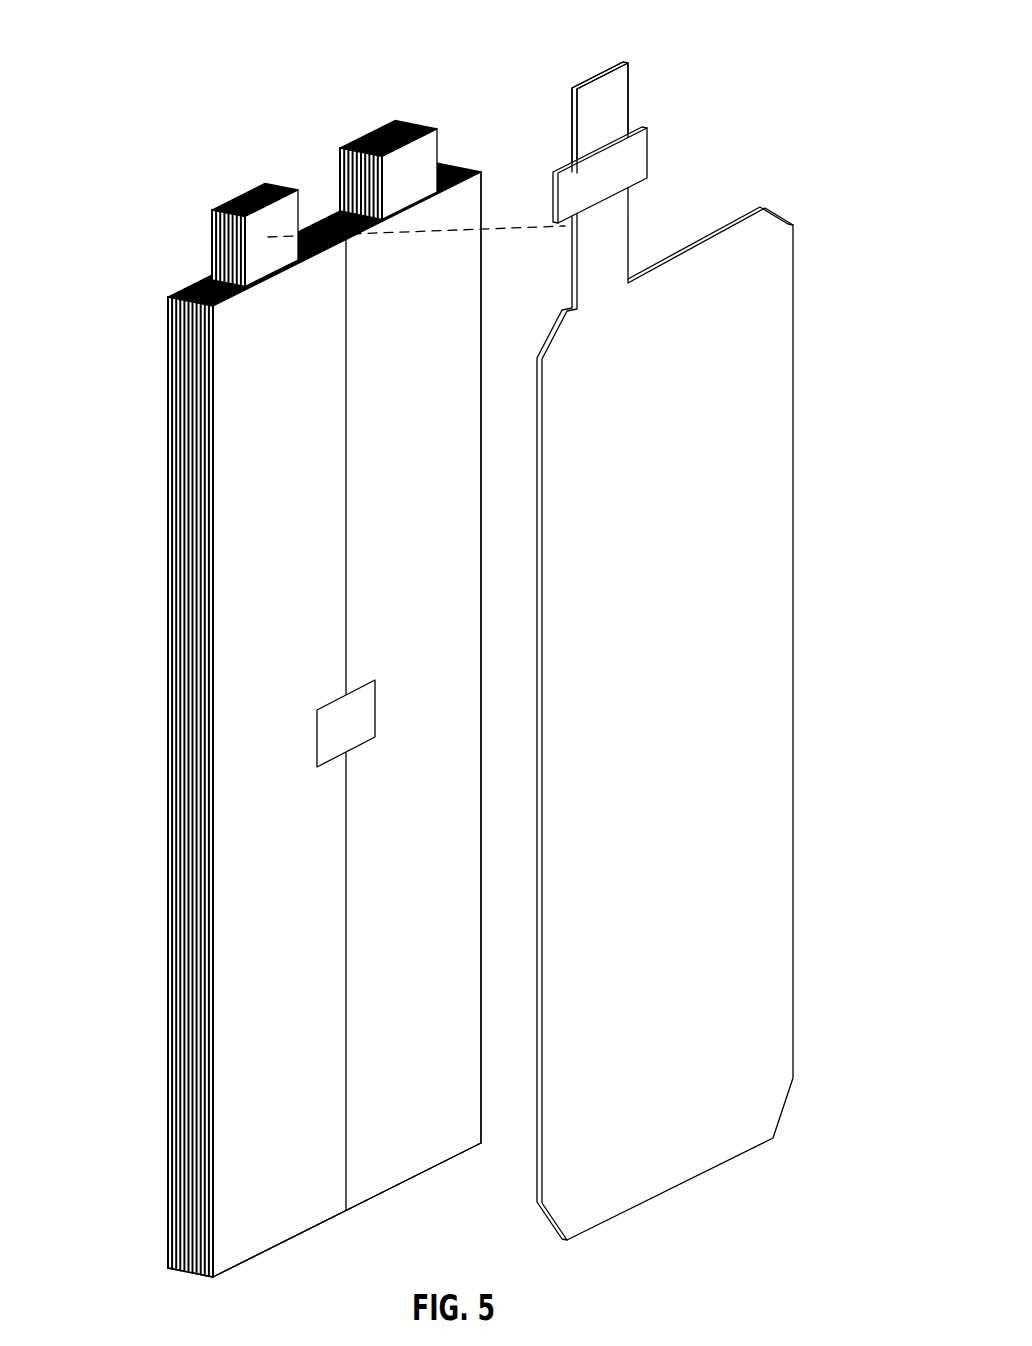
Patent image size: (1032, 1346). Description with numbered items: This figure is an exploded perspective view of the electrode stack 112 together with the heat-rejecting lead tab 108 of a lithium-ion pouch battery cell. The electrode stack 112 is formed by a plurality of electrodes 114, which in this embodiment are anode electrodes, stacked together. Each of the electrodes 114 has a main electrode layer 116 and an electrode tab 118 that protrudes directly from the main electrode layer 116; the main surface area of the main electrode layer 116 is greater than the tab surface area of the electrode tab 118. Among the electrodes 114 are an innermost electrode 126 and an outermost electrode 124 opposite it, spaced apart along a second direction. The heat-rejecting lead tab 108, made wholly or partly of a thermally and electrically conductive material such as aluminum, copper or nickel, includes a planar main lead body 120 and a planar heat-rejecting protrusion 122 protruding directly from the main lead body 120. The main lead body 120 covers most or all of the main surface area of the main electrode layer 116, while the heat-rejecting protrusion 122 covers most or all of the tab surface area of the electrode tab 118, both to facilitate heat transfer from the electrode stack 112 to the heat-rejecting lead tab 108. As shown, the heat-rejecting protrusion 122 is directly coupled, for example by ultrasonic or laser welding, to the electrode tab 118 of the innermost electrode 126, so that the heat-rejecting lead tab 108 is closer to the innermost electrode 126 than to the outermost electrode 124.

The heat-rejecting lead tab 108 is at (715, 651).
The electrode stack 112 is at (310, 699).
The electrodes 114 is at (195, 815).
The main electrode layer 116 is at (177, 678).
The electrode tab 118 is at (296, 200).
The main lead body 120 is at (732, 750).
The heat-rejecting protrusion 122 is at (623, 78).
The outermost electrode 124 is at (170, 1101).
The innermost electrode 126 is at (347, 1034).